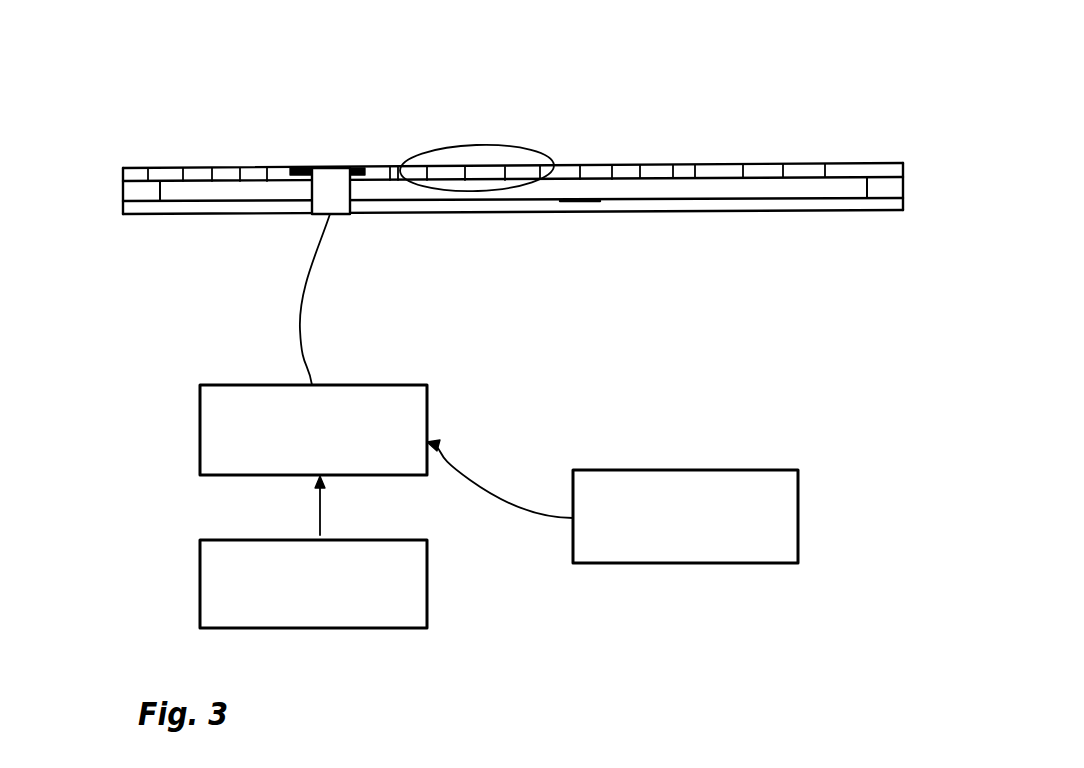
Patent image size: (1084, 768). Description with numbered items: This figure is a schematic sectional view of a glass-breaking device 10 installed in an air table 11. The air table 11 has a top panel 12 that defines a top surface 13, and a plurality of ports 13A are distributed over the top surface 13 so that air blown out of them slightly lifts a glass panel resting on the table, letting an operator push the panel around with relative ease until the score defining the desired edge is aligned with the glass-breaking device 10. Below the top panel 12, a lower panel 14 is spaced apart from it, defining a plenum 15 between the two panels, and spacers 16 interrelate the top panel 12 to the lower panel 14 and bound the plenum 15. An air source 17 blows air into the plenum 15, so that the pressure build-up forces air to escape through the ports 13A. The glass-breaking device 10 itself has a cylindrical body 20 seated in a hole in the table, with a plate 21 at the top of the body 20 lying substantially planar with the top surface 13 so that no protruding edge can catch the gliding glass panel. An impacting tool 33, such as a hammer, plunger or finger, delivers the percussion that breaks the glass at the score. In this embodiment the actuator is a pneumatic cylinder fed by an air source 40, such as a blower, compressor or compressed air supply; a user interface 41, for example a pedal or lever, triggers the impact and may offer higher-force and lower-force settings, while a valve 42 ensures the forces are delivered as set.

The glass-breaking device 10 is at (327, 276).
The air table 11 is at (590, 138).
The top panel 12 is at (723, 165).
The top surface 13 is at (805, 165).
The ports 13A is at (490, 145).
The lower panel 14 is at (698, 214).
The plenum 15 is at (777, 187).
The spacers 16 is at (123, 190).
The air source 17 is at (581, 205).
The body 20 is at (313, 193).
The plate 21 is at (352, 160).
The impacting tool 33 is at (328, 166).
The air source 40 is at (378, 628).
The user interface 41 is at (742, 470).
The valve 42 is at (388, 385).